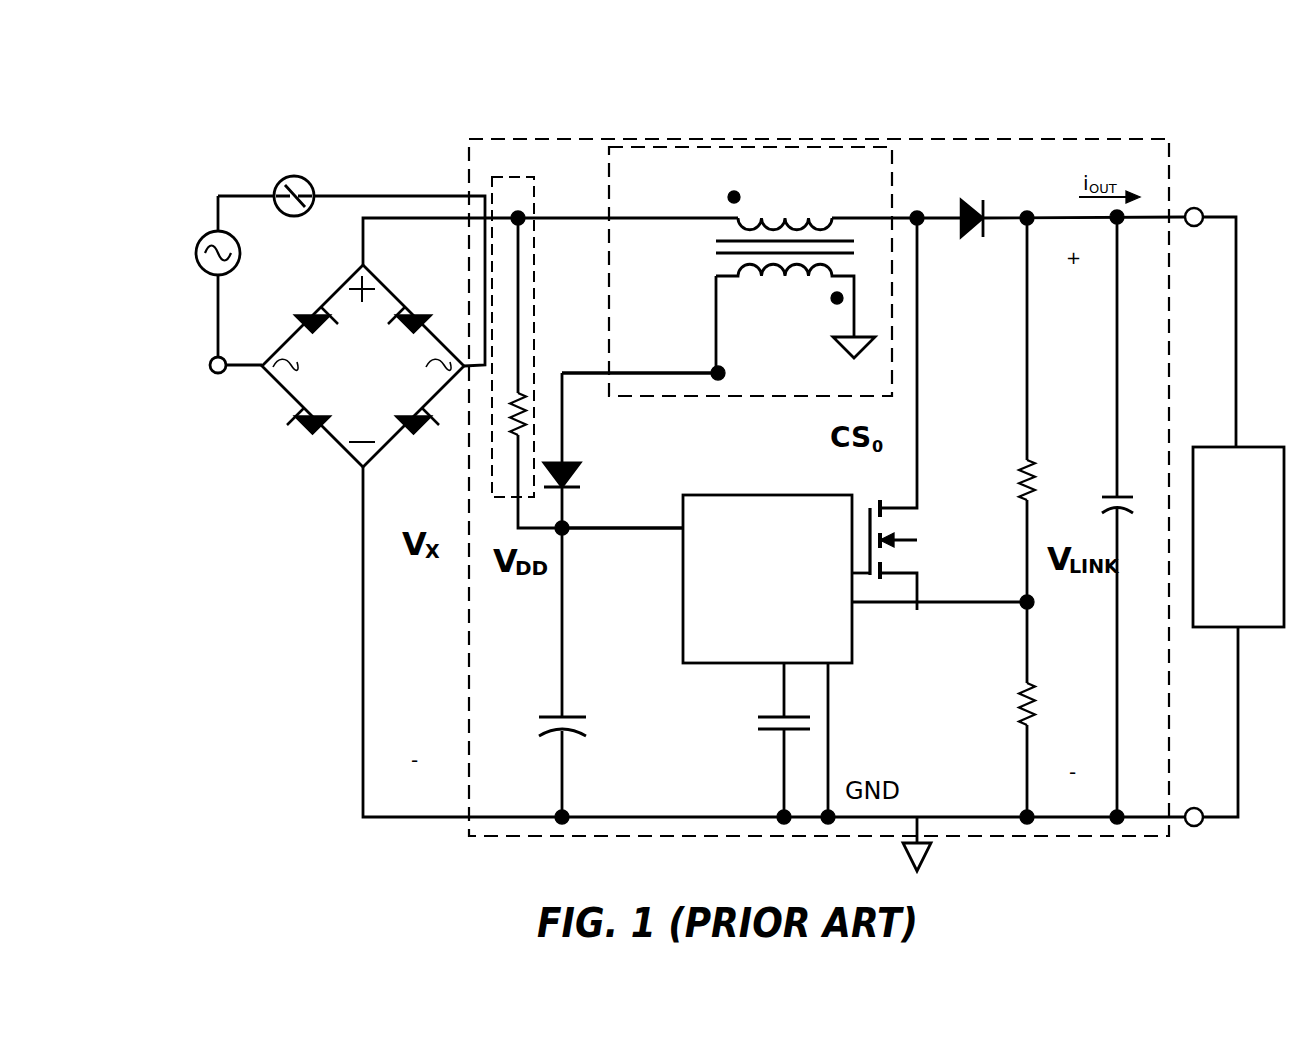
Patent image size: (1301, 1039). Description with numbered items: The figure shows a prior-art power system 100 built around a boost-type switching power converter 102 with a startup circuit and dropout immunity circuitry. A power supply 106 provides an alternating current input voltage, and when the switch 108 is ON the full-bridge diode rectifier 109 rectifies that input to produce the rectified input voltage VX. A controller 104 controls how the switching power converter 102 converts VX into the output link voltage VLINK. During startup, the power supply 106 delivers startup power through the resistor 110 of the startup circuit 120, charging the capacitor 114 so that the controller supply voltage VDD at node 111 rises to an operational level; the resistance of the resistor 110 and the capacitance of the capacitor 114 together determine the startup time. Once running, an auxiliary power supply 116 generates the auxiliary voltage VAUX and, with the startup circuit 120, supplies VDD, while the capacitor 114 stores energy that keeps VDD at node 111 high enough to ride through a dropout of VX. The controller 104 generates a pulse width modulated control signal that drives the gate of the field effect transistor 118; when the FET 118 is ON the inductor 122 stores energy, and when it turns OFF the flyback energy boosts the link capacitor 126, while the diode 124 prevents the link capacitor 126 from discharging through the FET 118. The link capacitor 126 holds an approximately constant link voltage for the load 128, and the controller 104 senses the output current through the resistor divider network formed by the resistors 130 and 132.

The power system 100 is at (1211, 209).
The switching power converter 102 is at (468, 619).
The controller 104 is at (750, 603).
The power supply 106 is at (205, 281).
The switch 108 is at (287, 176).
The full-bridge diode rectifier 109 is at (378, 380).
The resistor 110 is at (520, 391).
The node 111 is at (566, 532).
The capacitor 114 is at (556, 715).
The auxiliary power supply 116 is at (893, 357).
The field effect transistor (FET) 118 is at (918, 528).
The startup circuit 120 is at (492, 442).
The inductor 122 is at (762, 218).
The diode 124 is at (965, 201).
The link capacitor 126 is at (1112, 486).
The load 128 is at (1221, 561).
The resistor 130 is at (1022, 462).
The resistor 132 is at (1022, 685).